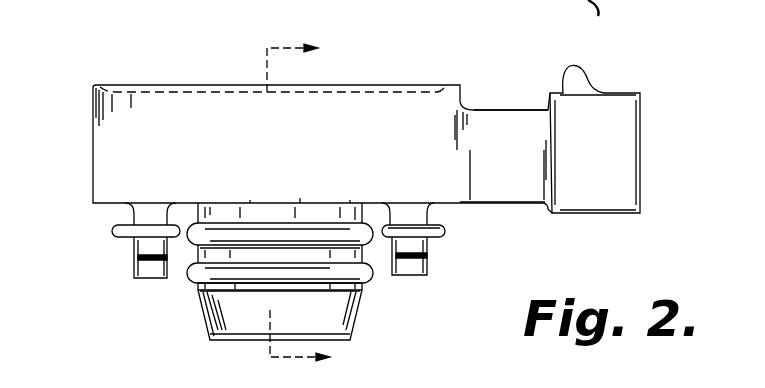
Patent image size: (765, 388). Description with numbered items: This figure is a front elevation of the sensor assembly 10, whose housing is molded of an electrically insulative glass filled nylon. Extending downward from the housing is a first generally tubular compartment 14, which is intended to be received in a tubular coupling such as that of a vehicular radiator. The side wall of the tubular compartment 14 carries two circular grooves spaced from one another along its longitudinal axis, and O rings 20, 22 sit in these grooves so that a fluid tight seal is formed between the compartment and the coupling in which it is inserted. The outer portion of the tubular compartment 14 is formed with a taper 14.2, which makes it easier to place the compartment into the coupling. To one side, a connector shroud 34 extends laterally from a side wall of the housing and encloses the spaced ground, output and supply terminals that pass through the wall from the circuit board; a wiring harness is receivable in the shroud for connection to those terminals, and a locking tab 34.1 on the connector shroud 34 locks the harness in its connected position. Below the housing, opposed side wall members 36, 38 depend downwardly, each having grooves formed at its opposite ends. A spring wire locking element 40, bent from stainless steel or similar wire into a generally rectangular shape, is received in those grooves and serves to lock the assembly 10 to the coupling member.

The sensor assembly 10 is at (97, 82).
The tubular compartment 14 is at (337, 322).
The taper 14.2 is at (357, 300).
The O ring 20 is at (332, 235).
The O ring 22 is at (197, 285).
The connector shroud 34 is at (516, 117).
The locking tab 34.1 is at (583, 86).
The side wall member 36 is at (133, 253).
The side wall member 38 is at (427, 250).
The spring wire locking element 40 is at (474, 221).